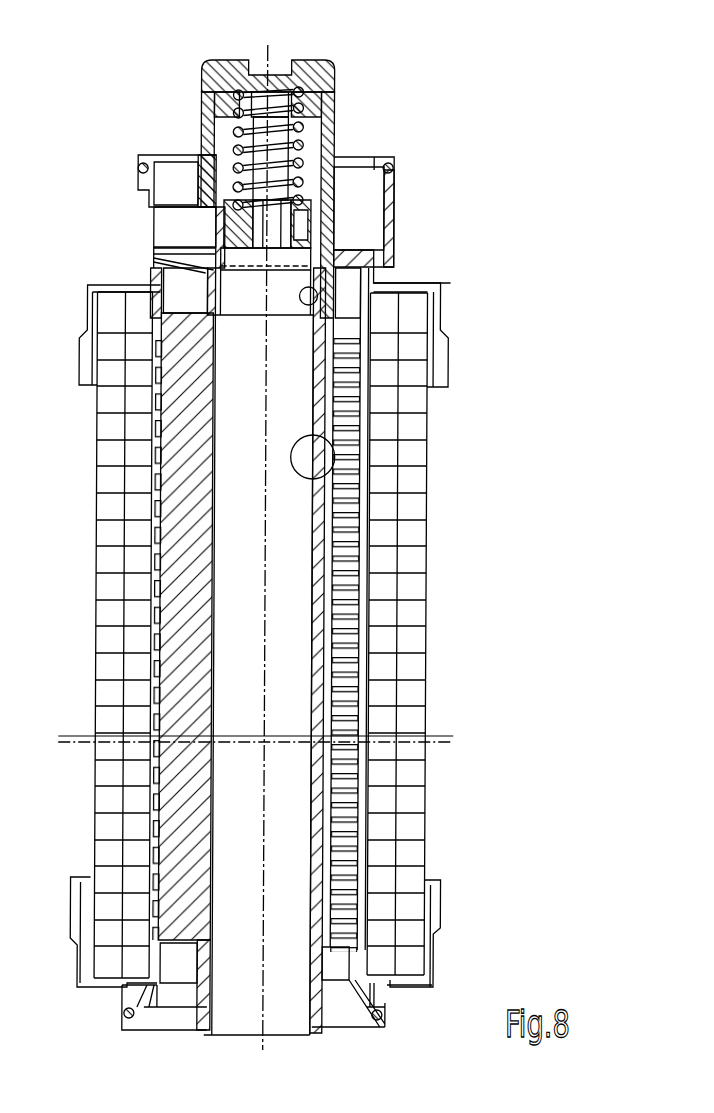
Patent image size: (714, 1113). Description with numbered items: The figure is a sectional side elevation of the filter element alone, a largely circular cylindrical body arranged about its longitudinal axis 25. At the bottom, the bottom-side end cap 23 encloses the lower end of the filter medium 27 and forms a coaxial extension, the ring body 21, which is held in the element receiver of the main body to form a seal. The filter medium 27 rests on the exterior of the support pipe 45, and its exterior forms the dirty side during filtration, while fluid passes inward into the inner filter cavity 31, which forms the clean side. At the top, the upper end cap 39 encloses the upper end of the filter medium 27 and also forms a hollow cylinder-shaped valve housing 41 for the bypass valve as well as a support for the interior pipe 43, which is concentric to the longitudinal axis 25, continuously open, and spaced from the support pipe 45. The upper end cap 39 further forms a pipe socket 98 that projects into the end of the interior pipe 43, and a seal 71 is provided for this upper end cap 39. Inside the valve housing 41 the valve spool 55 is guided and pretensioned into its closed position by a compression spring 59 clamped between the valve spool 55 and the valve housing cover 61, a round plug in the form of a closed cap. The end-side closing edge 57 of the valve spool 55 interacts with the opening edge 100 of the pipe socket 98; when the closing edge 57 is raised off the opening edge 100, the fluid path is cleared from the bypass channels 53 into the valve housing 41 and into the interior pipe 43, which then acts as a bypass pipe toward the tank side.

The ring body 21 is at (372, 1022).
The bottom-side end cap 23 is at (433, 963).
The longitudinal axis 25 is at (270, 45).
The filter medium 27 is at (413, 643).
The inner filter cavity 31 is at (323, 838).
The upper end cap 39 is at (433, 287).
The valve housing 41 is at (333, 130).
The interior pipe 43 is at (325, 485).
The support pipe 45 is at (358, 525).
The bypass channels 53 is at (177, 212).
The valve spool 55 is at (312, 187).
The closing edge 57 is at (318, 253).
The compression spring 59 is at (233, 130).
The valve housing cover 61 is at (317, 82).
The seal 71 is at (395, 165).
The pipe socket 98 is at (317, 300).
The opening edge 100 is at (213, 258).